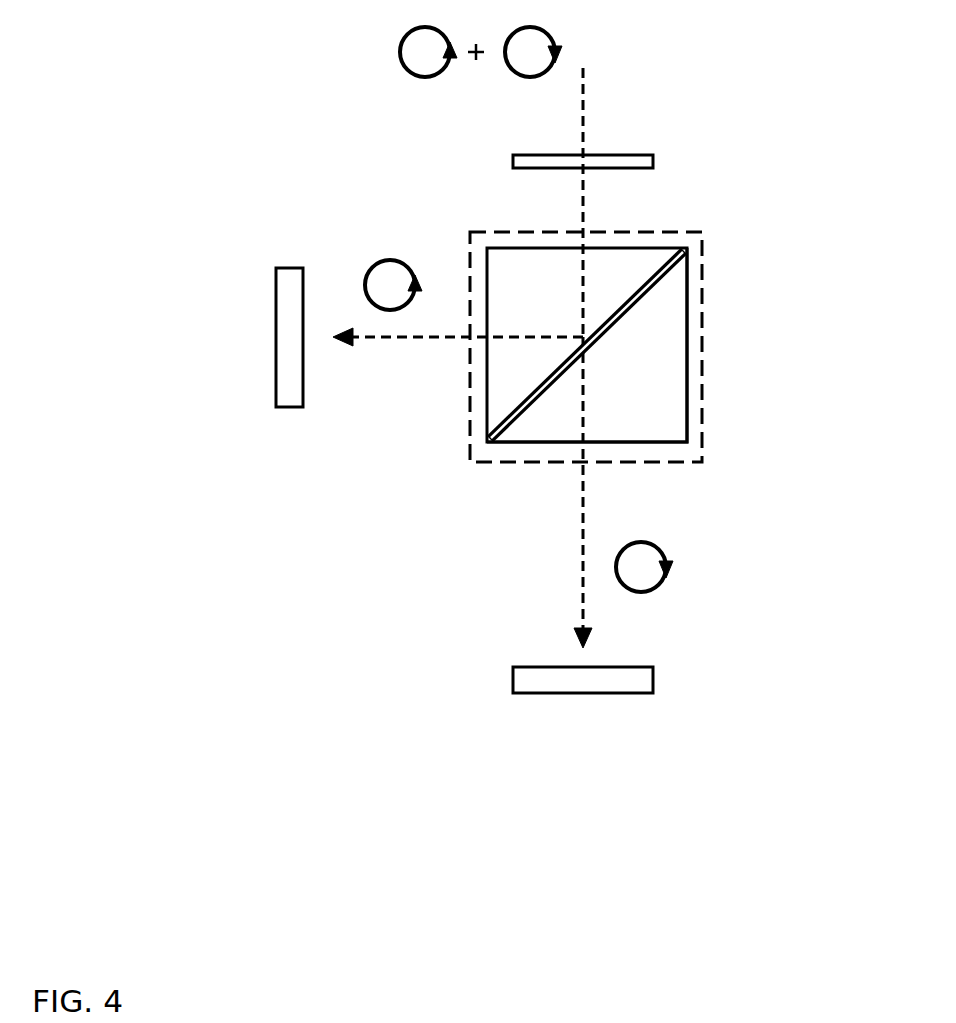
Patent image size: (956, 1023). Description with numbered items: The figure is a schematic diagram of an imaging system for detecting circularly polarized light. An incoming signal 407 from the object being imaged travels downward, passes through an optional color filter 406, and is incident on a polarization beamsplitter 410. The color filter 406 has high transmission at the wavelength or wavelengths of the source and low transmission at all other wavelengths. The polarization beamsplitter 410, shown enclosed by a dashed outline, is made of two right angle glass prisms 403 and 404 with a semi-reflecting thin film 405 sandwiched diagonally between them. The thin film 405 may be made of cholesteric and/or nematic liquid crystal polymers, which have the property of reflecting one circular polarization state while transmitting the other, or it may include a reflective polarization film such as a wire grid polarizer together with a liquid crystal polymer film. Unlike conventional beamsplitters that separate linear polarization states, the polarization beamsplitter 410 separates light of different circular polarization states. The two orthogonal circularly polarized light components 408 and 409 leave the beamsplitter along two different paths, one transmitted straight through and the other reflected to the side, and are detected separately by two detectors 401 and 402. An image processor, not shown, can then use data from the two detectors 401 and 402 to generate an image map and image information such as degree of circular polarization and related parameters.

The detector 401 is at (276, 383).
The detector 402 is at (653, 680).
The right angle glass prism 403 is at (607, 250).
The right angle glass prism 404 is at (687, 387).
The semi-reflecting thin film 405 is at (677, 253).
The color filter 406 is at (513, 162).
The incoming signal 407 is at (583, 112).
The circularly polarized light component 408 is at (577, 542).
The circularly polarized light component 409 is at (413, 340).
The polarization beamsplitter 410 is at (702, 303).